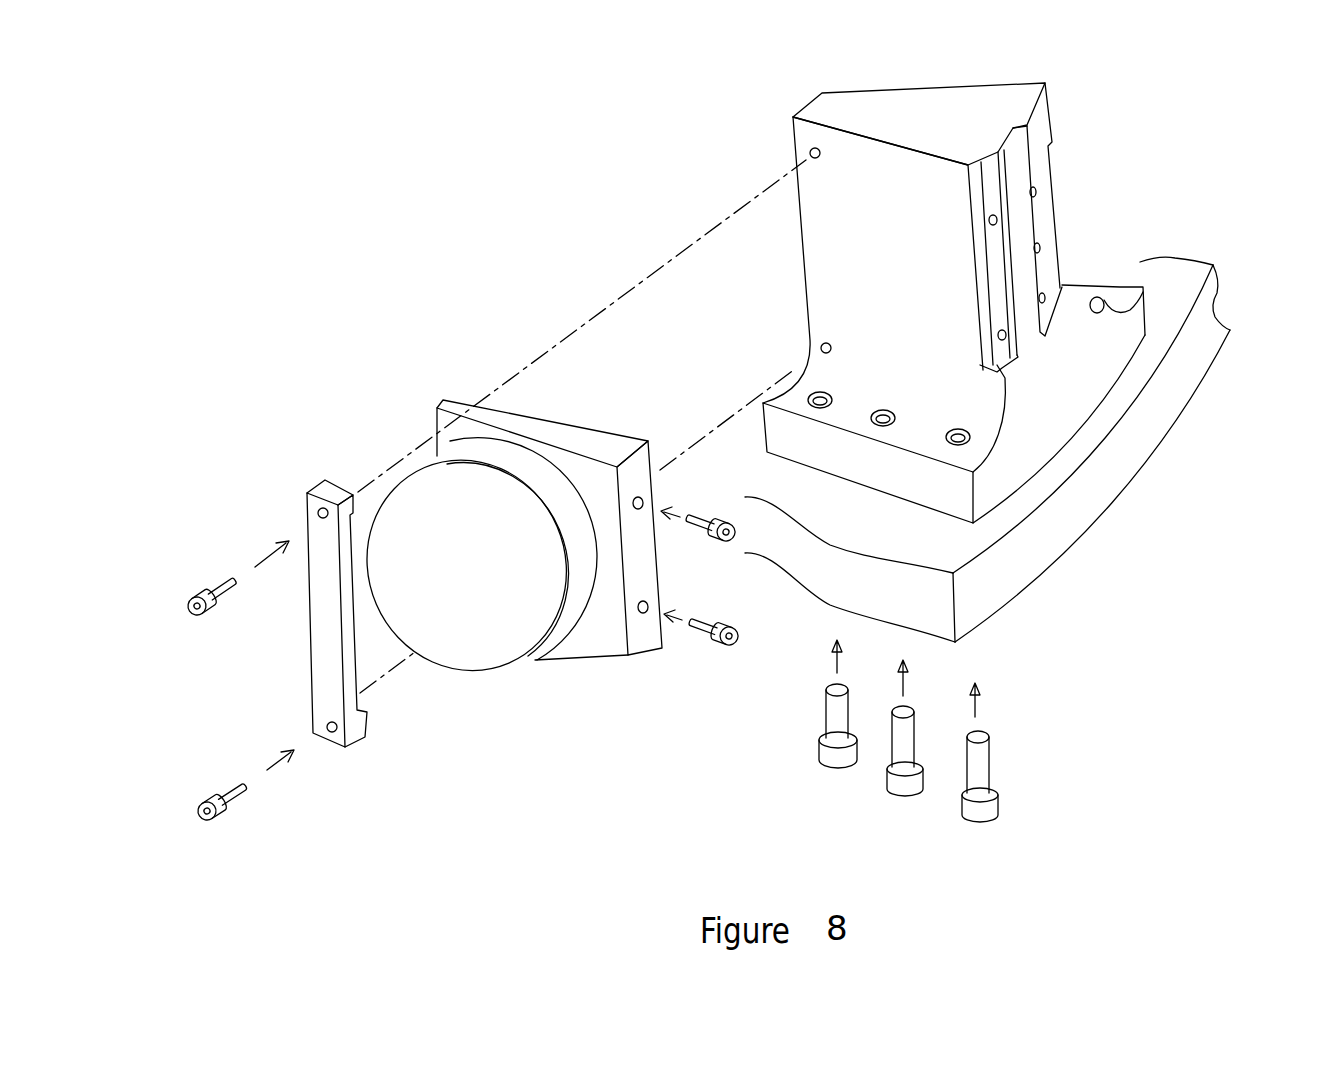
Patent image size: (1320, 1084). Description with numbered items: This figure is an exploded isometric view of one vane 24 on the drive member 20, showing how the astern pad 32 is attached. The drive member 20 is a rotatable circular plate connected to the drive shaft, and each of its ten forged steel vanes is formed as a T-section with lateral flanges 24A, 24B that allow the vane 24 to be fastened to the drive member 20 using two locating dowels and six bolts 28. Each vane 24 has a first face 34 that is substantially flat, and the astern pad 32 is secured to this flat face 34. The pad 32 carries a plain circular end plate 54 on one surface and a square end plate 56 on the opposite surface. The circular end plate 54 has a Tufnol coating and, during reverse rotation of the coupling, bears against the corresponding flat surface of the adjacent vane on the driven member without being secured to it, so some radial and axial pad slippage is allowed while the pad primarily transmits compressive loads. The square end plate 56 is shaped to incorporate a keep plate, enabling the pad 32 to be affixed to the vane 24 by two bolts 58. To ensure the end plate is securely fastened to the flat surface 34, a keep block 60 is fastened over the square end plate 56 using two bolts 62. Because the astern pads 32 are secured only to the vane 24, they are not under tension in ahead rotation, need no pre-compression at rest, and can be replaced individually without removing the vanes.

The drive member 20 is at (1092, 488).
The vane 24 is at (1078, 400).
The lateral flange 24A is at (1108, 293).
The lateral flange 24B is at (792, 398).
The bolts 28 is at (822, 760).
The astern pad 32 is at (571, 610).
The first face 34 is at (862, 250).
The circular end plate 54 is at (540, 657).
The square end plate 56 is at (637, 640).
The bolts 58 is at (703, 537).
The keep block 60 is at (320, 622).
The bolts 62 is at (220, 607).